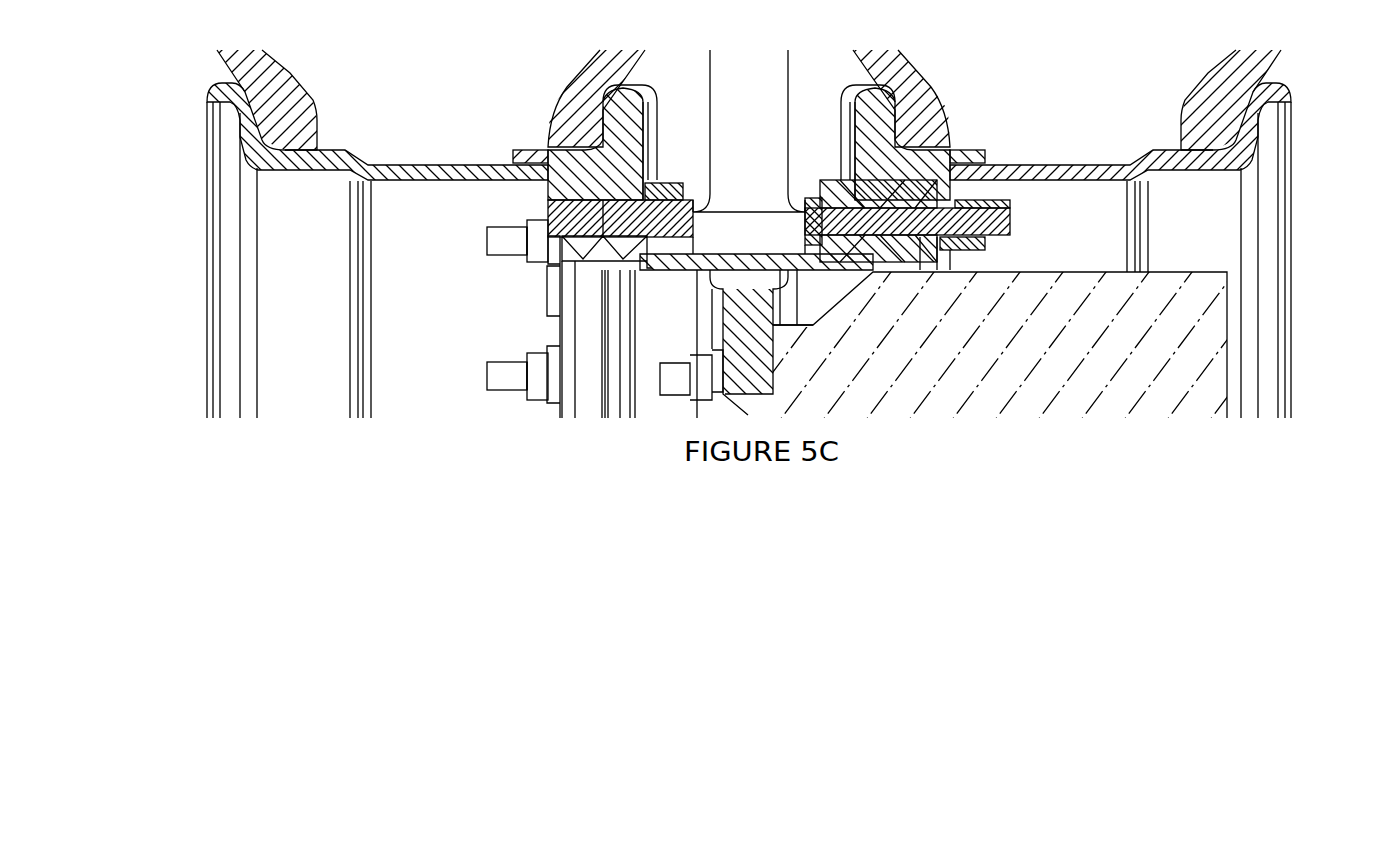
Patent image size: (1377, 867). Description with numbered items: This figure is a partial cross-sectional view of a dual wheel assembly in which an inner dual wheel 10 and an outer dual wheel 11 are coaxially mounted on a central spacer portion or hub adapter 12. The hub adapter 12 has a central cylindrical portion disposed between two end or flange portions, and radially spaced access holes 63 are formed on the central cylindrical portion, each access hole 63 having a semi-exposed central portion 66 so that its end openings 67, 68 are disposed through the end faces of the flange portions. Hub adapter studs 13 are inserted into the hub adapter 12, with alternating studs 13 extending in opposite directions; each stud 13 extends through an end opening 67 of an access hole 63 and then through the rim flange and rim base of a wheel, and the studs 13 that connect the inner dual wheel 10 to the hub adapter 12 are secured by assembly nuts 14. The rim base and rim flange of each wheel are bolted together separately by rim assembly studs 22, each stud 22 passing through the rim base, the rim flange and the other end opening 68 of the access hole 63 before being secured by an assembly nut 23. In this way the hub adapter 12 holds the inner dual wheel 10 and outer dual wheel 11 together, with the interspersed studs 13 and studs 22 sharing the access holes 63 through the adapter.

The inner dual wheel 10 is at (1240, 155).
The outer dual wheel 11 is at (215, 98).
The hub adapter 12 is at (808, 203).
The hub adapter stud 13 is at (1010, 218).
The assembly nut 14 is at (977, 240).
The rim assembly stud 22 is at (547, 213).
The assembly nut 23 is at (664, 186).
The access hole 63 is at (740, 230).
The semi-exposed central portion 66 is at (713, 217).
The end opening 67 is at (837, 187).
The end opening 68 is at (660, 183).